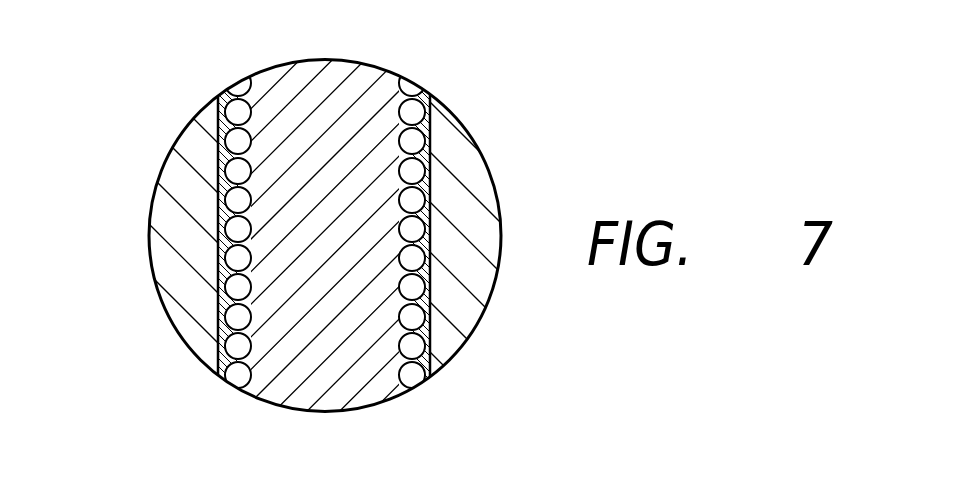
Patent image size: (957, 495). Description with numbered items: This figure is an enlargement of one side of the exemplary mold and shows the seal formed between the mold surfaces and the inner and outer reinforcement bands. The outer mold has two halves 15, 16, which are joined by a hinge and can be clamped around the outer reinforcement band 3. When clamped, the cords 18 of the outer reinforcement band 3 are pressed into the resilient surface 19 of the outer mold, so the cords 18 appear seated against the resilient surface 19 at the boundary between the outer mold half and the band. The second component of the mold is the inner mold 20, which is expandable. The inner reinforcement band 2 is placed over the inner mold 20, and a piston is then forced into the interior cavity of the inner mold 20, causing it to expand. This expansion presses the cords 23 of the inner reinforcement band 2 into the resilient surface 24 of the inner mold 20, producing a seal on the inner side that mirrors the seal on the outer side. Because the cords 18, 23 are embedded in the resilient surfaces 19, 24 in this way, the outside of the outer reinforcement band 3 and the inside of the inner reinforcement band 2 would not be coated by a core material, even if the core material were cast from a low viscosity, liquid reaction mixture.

The inner reinforcement band 2 is at (427, 202).
The outer reinforcement band 3 is at (220, 200).
The half 15 is at (222, 247).
The half 16 is at (178, 232).
The cords 18 is at (240, 141).
The resilient surface 19 is at (227, 275).
The inner mold 20 is at (498, 228).
The cords 23 is at (410, 139).
The resilient surface 24 is at (423, 245).